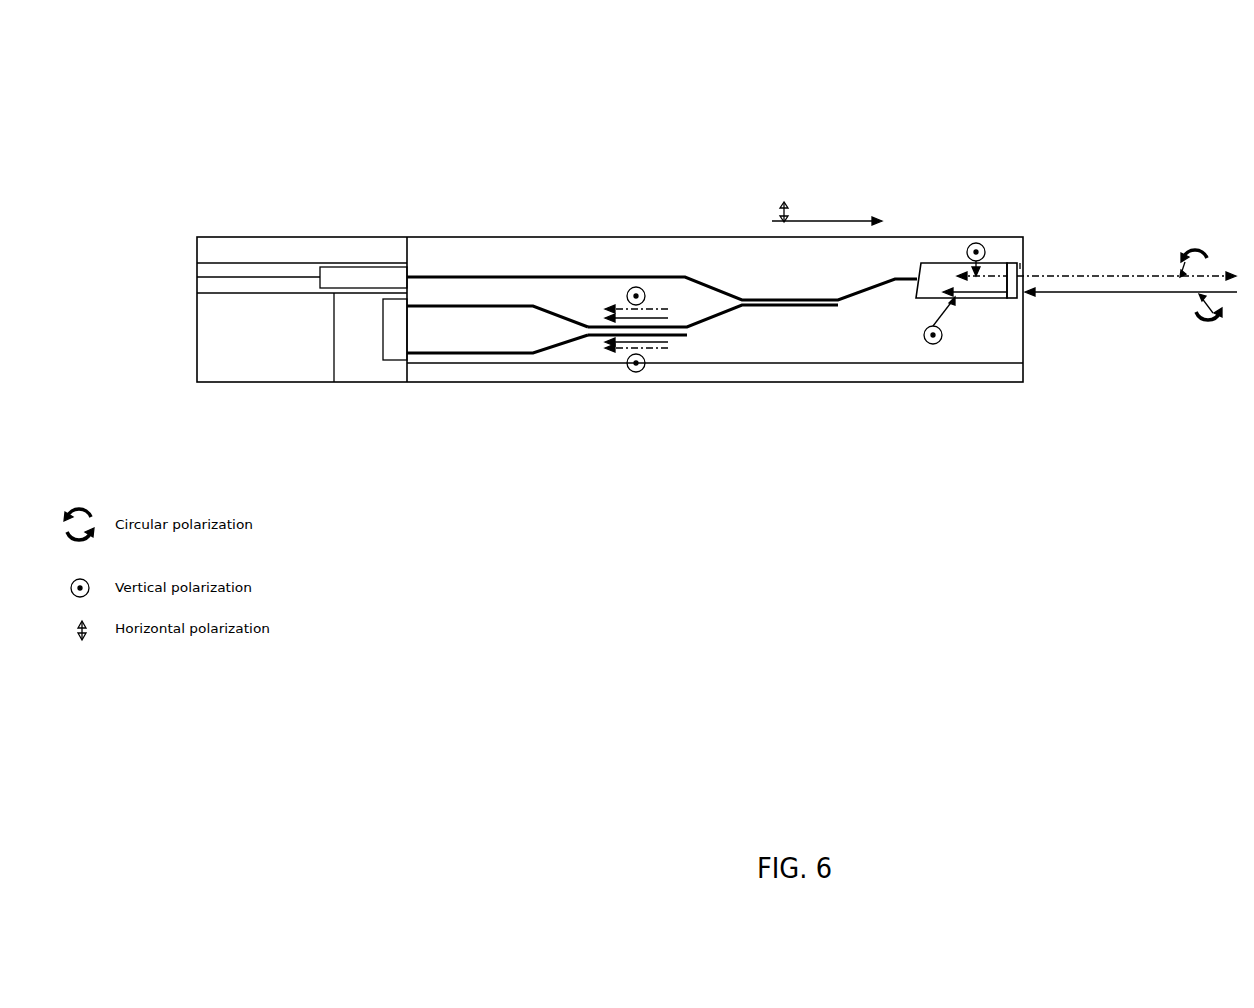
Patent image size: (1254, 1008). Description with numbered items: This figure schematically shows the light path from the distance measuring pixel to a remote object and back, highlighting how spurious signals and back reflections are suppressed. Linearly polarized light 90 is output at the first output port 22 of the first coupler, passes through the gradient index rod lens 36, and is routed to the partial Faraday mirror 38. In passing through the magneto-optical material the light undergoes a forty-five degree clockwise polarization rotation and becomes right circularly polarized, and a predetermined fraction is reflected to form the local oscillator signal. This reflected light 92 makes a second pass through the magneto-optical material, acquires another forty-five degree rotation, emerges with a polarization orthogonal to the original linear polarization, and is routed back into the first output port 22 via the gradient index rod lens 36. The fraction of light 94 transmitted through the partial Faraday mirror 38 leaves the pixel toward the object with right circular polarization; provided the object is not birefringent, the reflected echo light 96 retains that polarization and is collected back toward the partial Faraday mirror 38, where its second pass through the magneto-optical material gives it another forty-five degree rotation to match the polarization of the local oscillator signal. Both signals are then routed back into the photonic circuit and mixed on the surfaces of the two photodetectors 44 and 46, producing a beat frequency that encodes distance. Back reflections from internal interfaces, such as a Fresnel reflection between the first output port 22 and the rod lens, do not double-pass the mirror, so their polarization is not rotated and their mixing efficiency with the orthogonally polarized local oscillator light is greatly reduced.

The first output port 22 is at (919, 279).
The gradient index rod lens 36 is at (957, 272).
The partial Faraday mirror 38 is at (1019, 262).
The photodetector 44 is at (408, 300).
The photodetector 46 is at (407, 348).
The linearly polarized light 90 is at (812, 220).
The reflected light 92 is at (989, 276).
The transmitted light 94 is at (1132, 276).
The reflected echo light 96 is at (1108, 293).